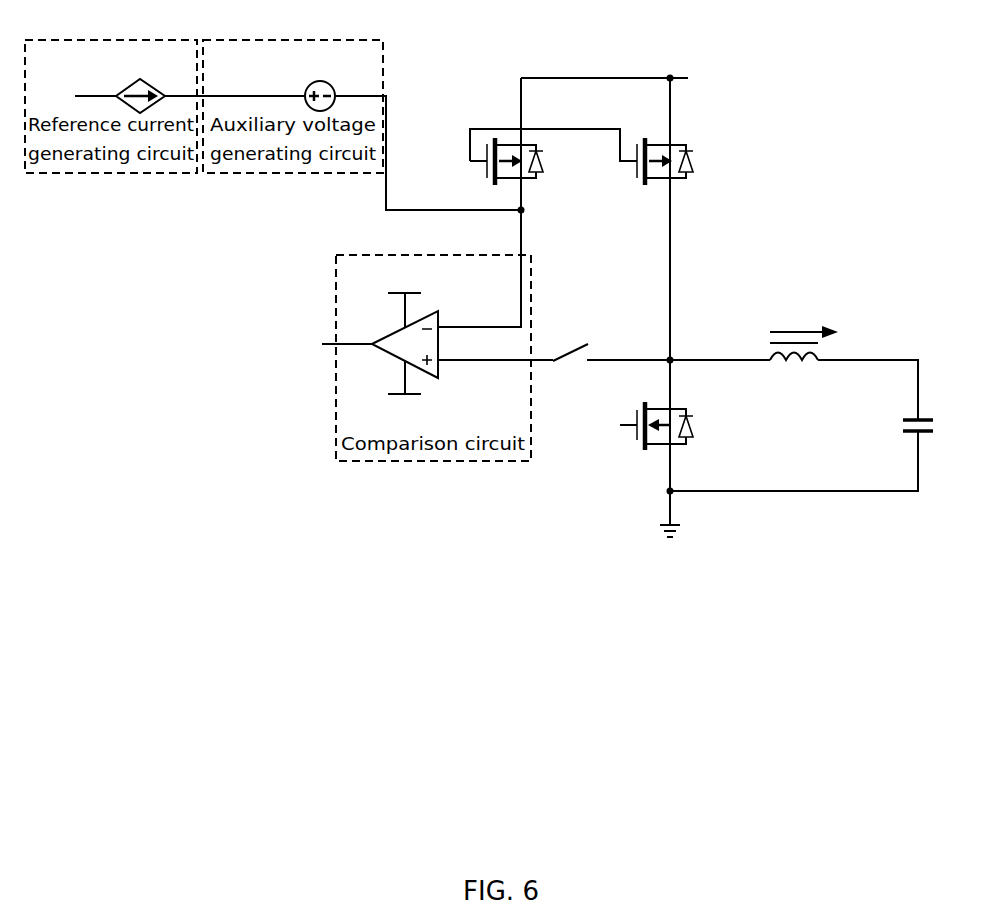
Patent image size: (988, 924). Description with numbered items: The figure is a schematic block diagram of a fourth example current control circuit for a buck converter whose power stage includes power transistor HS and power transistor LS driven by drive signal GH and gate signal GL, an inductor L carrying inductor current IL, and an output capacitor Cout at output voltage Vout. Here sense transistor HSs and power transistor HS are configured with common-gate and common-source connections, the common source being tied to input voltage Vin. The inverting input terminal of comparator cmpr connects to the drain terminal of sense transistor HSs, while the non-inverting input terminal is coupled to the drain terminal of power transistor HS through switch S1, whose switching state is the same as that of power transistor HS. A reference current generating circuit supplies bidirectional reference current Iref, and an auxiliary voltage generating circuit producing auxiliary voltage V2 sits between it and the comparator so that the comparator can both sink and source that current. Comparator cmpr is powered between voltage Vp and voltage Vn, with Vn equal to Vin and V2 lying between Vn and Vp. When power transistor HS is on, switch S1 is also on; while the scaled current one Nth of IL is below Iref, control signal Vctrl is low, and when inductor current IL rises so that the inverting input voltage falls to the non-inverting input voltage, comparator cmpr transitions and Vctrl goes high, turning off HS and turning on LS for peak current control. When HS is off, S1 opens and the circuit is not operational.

The reference current Iref is at (140, 85).
The auxiliary voltage V2 is at (319, 85).
The sense transistor HSs is at (480, 161).
The power transistor HS is at (681, 161).
The power transistor LS is at (687, 436).
The drive signal GH is at (591, 148).
The low-side gate signal GL is at (598, 425).
The input voltage Vin is at (707, 79).
The output voltage Vout is at (919, 348).
The comparator cmpr is at (391, 343).
The voltage Vp is at (405, 277).
The voltage Vn is at (406, 411).
The control signal Vctrl is at (295, 344).
The switch S1 is at (578, 339).
The inductor L is at (794, 368).
The inductor current IL is at (804, 318).
The output capacitor Cout is at (893, 413).